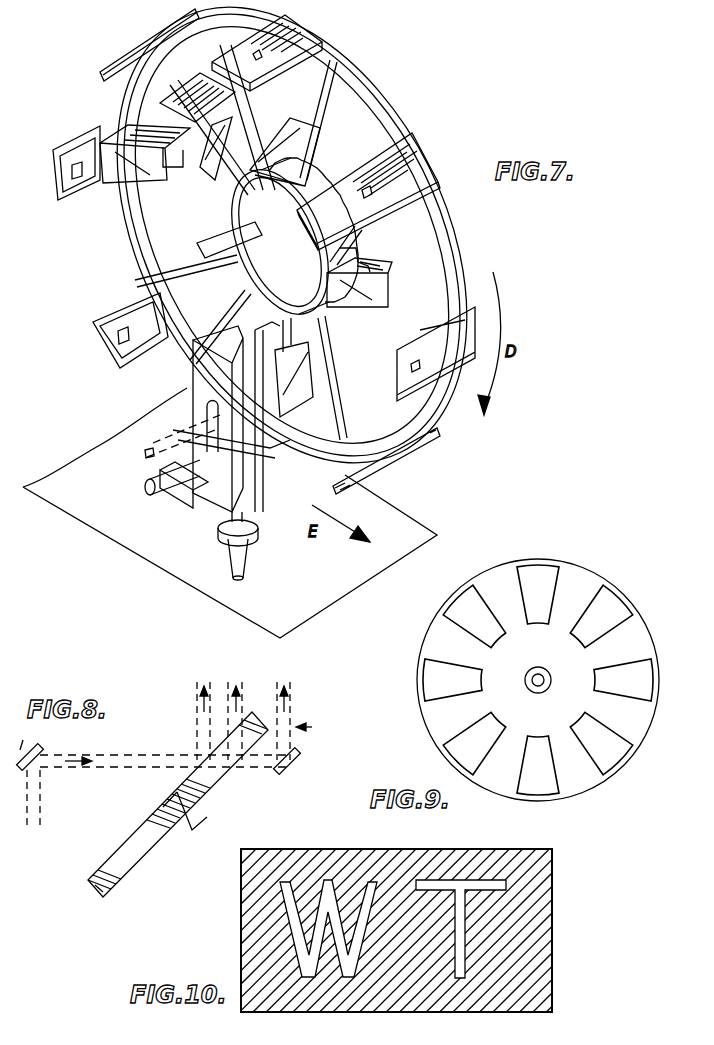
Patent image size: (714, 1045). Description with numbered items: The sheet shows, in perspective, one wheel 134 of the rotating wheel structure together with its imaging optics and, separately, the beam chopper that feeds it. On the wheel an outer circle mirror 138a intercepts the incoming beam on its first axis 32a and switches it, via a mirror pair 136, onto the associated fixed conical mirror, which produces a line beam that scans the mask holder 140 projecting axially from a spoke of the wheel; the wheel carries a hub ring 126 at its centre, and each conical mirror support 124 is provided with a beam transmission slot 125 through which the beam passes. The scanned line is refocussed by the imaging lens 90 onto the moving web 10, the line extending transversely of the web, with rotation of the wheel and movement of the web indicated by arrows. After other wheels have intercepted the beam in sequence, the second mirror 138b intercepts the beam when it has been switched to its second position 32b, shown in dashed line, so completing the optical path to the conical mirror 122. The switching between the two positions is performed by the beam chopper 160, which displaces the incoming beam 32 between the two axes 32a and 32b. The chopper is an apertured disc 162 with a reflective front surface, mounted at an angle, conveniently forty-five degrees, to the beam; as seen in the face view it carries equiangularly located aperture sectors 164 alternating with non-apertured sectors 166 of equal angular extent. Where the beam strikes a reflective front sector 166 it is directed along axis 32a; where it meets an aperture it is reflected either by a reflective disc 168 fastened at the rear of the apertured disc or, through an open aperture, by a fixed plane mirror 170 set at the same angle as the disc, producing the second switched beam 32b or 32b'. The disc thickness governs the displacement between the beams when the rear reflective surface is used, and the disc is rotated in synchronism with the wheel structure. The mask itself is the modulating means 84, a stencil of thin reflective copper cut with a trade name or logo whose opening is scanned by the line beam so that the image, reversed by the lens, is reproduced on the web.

In FIG. 7, the web 10 is at (407, 530).
In FIG. 8, the incoming beam 32 is at (40, 812).
In FIG. 7, the beam axis 32a is at (165, 488).
In FIG. 8, the beam axis 32a is at (197, 696).
In FIG. 7, the beam axis 32b is at (148, 430).
In FIG. 8, the beam axis 32b is at (253, 713).
In FIG. 8, the second switched beam 32b' is at (305, 718).
In FIG. 10, the modulating means 84 is at (552, 940).
In FIG. 7, the imaging lens 90 is at (218, 536).
In FIG. 7, the conical mirror 122 is at (193, 363).
In FIG. 7, the conical mirror support 124 is at (200, 380).
In FIG. 7, the beam transmission slot 125 is at (145, 453).
In FIG. 7, the hub ring 126 is at (213, 280).
In FIG. 7, the filter wheel 134 is at (390, 128).
In FIG. 7, the mirror pair 136 is at (263, 313).
In FIG. 7, the outer circle mirror 138a is at (302, 432).
In FIG. 7, the mirror 138b is at (392, 438).
In FIG. 7, the mask holder 140 is at (83, 182).
In FIG. 8, the beam chopper 160 is at (312, 728).
In FIG. 9, the apertured disc 162 is at (608, 578).
In FIG. 8, the aperture sectors 164 is at (147, 830).
In FIG. 9, the aperture sectors 164 is at (543, 580).
In FIG. 9, the non-apertured sectors 166 is at (502, 587).
In FIG. 8, the reflective disc 168 is at (138, 876).
In FIG. 8, the fixed plane mirror 170 is at (292, 768).